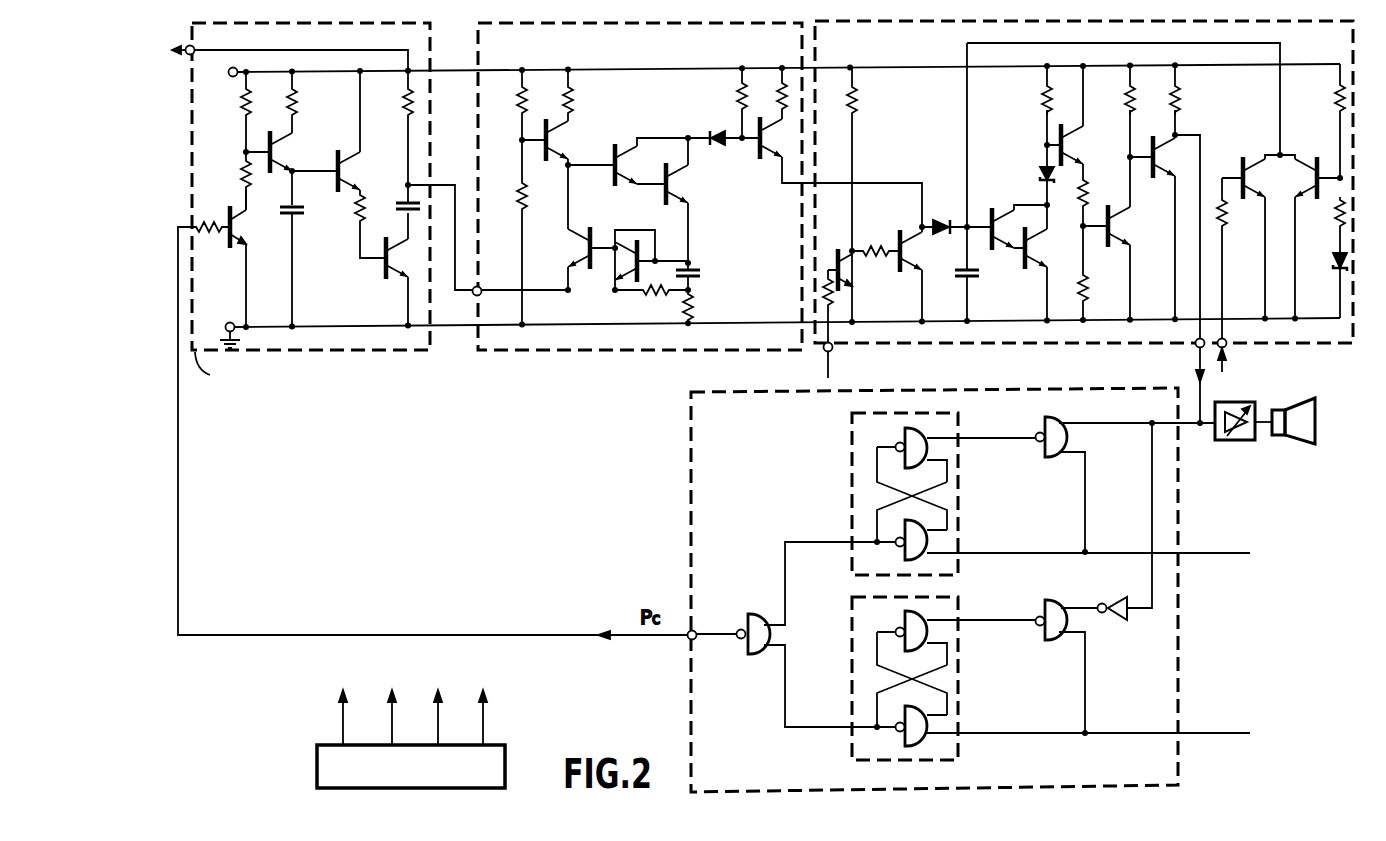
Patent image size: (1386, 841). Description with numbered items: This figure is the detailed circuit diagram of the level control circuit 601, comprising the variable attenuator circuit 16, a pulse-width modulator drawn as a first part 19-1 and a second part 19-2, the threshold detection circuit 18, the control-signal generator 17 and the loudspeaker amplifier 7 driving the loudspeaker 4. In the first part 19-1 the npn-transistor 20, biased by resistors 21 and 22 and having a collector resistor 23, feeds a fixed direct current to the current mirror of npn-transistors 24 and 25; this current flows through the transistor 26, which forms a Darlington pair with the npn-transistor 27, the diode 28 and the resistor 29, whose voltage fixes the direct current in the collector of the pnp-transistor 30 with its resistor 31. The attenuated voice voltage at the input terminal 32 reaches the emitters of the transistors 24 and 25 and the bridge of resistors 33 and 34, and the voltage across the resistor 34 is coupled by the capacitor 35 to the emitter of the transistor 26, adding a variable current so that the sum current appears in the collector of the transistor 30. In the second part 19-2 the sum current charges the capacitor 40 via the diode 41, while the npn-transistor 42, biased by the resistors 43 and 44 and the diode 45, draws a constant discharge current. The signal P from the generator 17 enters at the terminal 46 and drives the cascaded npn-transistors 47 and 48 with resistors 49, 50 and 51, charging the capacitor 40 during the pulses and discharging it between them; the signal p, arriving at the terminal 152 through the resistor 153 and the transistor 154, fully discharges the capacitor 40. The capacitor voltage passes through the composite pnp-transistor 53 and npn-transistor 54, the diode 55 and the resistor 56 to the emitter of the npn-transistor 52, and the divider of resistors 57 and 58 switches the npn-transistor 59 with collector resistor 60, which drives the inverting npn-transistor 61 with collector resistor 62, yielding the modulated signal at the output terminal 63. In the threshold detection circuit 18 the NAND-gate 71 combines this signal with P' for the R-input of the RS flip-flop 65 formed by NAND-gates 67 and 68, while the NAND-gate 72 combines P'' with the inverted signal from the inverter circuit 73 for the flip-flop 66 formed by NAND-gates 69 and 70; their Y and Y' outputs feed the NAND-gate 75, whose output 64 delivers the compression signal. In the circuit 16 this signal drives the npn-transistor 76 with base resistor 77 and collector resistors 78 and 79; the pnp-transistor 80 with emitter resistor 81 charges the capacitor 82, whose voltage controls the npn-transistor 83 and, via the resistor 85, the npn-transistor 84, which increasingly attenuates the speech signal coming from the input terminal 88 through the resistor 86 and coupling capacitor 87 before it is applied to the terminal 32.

The loudspeaker 4 is at (1303, 440).
The loudspeaker amplifier 7 is at (1243, 442).
The variable attenuator circuit 16 is at (322, 224).
The control-signal generator 17 is at (317, 772).
The threshold detector circuit 18 is at (725, 427).
The first part of the pulse width modulator 19-1 is at (778, 50).
The second part of the pulse width modulator 19-2 is at (1337, 47).
The npn-transistor 20 is at (560, 148).
The resistor 21 is at (520, 108).
The resistor 22 is at (520, 198).
The collector resistor 23 is at (570, 108).
The npn-transistor 24 is at (584, 248).
The npn-transistor 25 is at (625, 262).
The npn-transistor 26 is at (690, 183).
The npn-transistor 27 is at (620, 163).
The diode 28 is at (708, 130).
The resistor 29 is at (740, 110).
The pnp-transistor 30 is at (766, 139).
The resistor 31 is at (780, 114).
The input terminal 32 is at (473, 295).
The resistor 33 is at (648, 293).
The resistor 34 is at (692, 300).
The capacitor 35 is at (699, 272).
The capacitor 40 is at (976, 280).
The diode 41 is at (940, 218).
The npn-transistor 42 is at (1312, 181).
The resistor 43 is at (1337, 106).
The resistor 44 is at (1337, 214).
The diode 45 is at (1334, 264).
The terminal 46 is at (834, 352).
The npn-transistor 47 is at (849, 272).
The npn-transistor 48 is at (912, 253).
The resistor 49 is at (834, 300).
The resistor 50 is at (854, 106).
The resistor 51 is at (862, 249).
The npn-transistor 52 is at (1075, 148).
The pnp-transistor 53 is at (1000, 226).
The npn-transistor 54 is at (1044, 250).
The diode 55 is at (1040, 175).
The resistor 56 is at (1044, 107).
The resistor 57 is at (1085, 196).
The resistor 58 is at (1086, 288).
The npn-transistor 59 is at (1122, 228).
The resistor 60 is at (1128, 106).
The npn-transistor 61 is at (1162, 156).
The resistor 62 is at (1178, 106).
The output terminal 63 is at (1197, 348).
The output 64 is at (687, 640).
The RS flip-flop 65 is at (1028, 488).
The RS flip-flop 66 is at (1031, 685).
The NAND-gate 67 is at (905, 437).
The NAND-gate 68 is at (905, 553).
The NAND-gate 69 is at (905, 620).
The NAND-gate 70 is at (905, 738).
The NAND-gate 71 is at (1046, 418).
The NAND-gate 72 is at (1042, 604).
The inverter circuit 73 is at (1113, 625).
The NAND-gate 75 is at (752, 652).
The npn-transistor 76 is at (238, 229).
The base resistor 77 is at (200, 236).
The collector resistor 78 is at (244, 108).
The collector resistor 79 is at (244, 184).
The pnp-transistor 80 is at (282, 154).
The emitter resistor 81 is at (294, 108).
The capacitor 82 is at (300, 216).
The npn-transistor 83 is at (352, 164).
The npn-transistor 84 is at (394, 250).
The resistor 85 is at (358, 208).
The resistor 86 is at (406, 106).
The coupling capacitor 87 is at (405, 200).
The input terminal 88 is at (194, 47).
The terminal 152 is at (1228, 349).
The resistor 153 is at (1226, 226).
The transistor 154 is at (1240, 170).
The level control circuit 601 is at (603, 460).